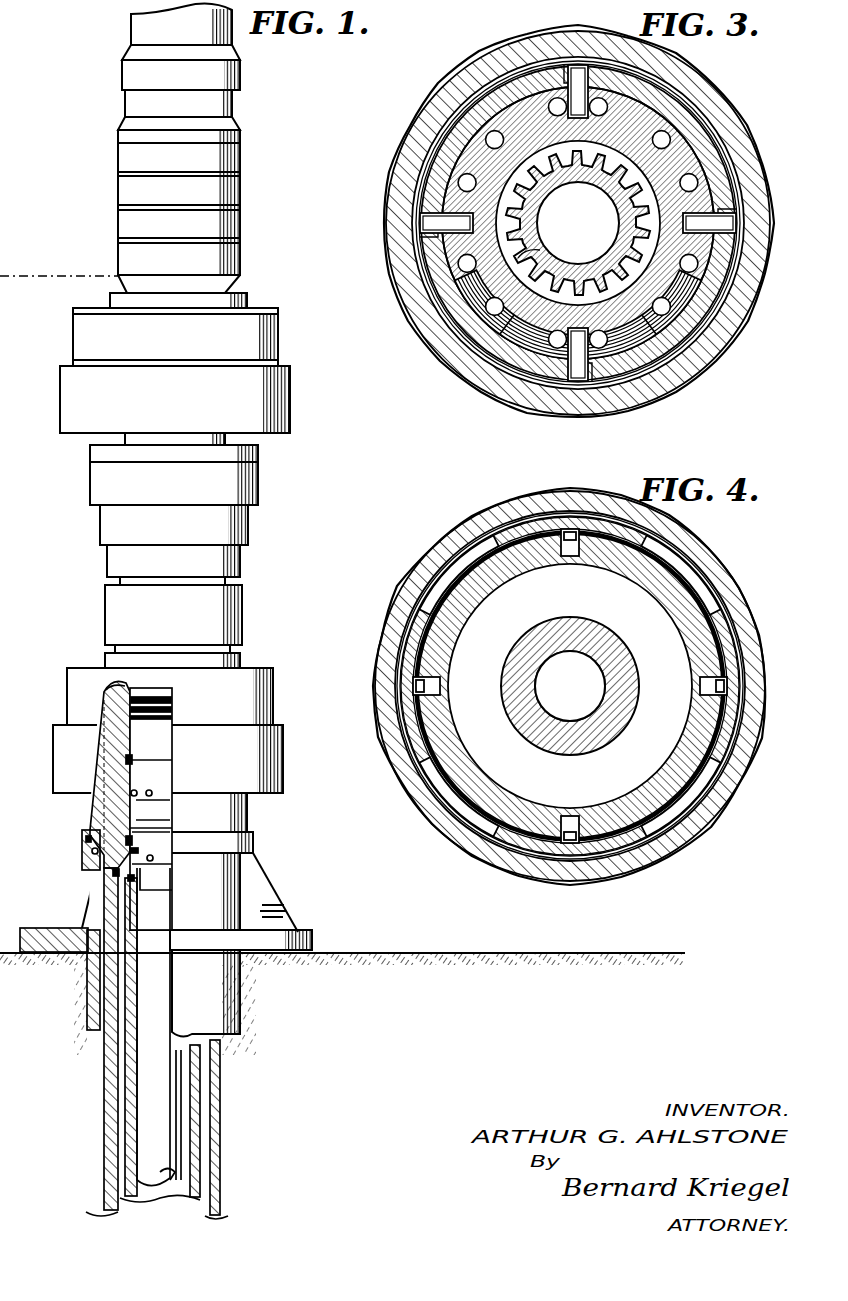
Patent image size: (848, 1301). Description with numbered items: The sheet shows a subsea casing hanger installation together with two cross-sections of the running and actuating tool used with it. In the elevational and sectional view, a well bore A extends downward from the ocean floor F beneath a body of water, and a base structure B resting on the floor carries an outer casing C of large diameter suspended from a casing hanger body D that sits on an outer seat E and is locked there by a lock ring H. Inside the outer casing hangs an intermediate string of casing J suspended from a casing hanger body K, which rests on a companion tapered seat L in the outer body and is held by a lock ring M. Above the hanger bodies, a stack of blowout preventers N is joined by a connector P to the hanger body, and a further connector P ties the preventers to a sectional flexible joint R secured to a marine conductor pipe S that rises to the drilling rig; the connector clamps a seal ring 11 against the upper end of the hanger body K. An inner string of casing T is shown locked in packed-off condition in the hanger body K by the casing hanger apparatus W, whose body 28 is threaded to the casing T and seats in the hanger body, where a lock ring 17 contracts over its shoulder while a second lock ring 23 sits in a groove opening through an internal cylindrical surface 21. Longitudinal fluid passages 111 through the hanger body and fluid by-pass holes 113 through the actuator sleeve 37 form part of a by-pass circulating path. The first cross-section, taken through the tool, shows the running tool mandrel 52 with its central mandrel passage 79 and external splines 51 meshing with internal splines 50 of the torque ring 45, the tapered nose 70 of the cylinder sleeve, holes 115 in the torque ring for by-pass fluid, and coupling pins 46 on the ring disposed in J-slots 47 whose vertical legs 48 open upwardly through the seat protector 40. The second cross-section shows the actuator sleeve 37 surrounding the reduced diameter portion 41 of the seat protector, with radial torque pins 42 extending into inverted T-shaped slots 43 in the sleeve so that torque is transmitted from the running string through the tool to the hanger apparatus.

In FIG. 1, the marine conductor pipe S is at (137, 29).
In FIG. 1, the flexible joint R is at (225, 226).
In FIG. 1, the connector P is at (268, 402).
In FIG. 1, the blowout preventers N is at (240, 490).
In FIG. 1, the casing hanger body K is at (110, 776).
In FIG. 3, the casing hanger body K is at (750, 152).
In FIG. 4, the casing hanger body K is at (426, 566).
In FIG. 1, the casing hanger body D is at (97, 812).
In FIG. 1, the lock ring H is at (88, 838).
In FIG. 1, the outer seat E is at (92, 850).
In FIG. 1, the tapered seat L is at (113, 872).
In FIG. 1, the lock ring M is at (128, 879).
In FIG. 1, the casing hanger apparatus W is at (160, 803).
In FIG. 1, the base structure B is at (275, 910).
In FIG. 1, the ocean floor F is at (415, 951).
In FIG. 1, the outer casing C is at (104, 1050).
In FIG. 1, the well bore A is at (220, 1098).
In FIG. 1, the intermediate string of casing J is at (125, 1118).
In FIG. 1, the inner string of casing T is at (170, 1153).
In FIG. 1, the seal ring 11 is at (128, 687).
In FIG. 1, the seat protector 40 is at (160, 742).
In FIG. 3, the seat protector 40 is at (725, 305).
In FIG. 1, the lock ring 23 is at (132, 758).
In FIG. 1, the fluid by-pass holes 113 is at (152, 793).
In FIG. 1, the lock ring 17 is at (140, 841).
In FIG. 1, the longitudinal fluid passages 111 is at (160, 857).
In FIG. 1, the body 28 is at (165, 878).
In FIG. 3, the torque ring 45 is at (505, 110).
In FIG. 3, the coupling pins 46 is at (668, 86).
In FIG. 3, the J-slots 47 is at (576, 62).
In FIG. 3, the vertical legs 48 is at (552, 74).
In FIG. 3, the holes 115 is at (665, 150).
In FIG. 3, the internal splines 50 is at (632, 178).
In FIG. 3, the tapered nose 70 is at (578, 223).
In FIG. 3, the external splines 51 is at (545, 251).
In FIG. 3, the running tool mandrel 52 is at (596, 300).
In FIG. 4, the running tool mandrel 52 is at (620, 660).
In FIG. 4, the actuator sleeve 37 is at (456, 845).
In FIG. 4, the internal cylindrical surface 21 is at (700, 571).
In FIG. 4, the inverted T-shaped slots 43 is at (549, 522).
In FIG. 4, the reduced diameter portion 41 is at (492, 580).
In FIG. 4, the radial torque pins 42 is at (571, 558).
In FIG. 4, the central mandrel passage 79 is at (570, 686).